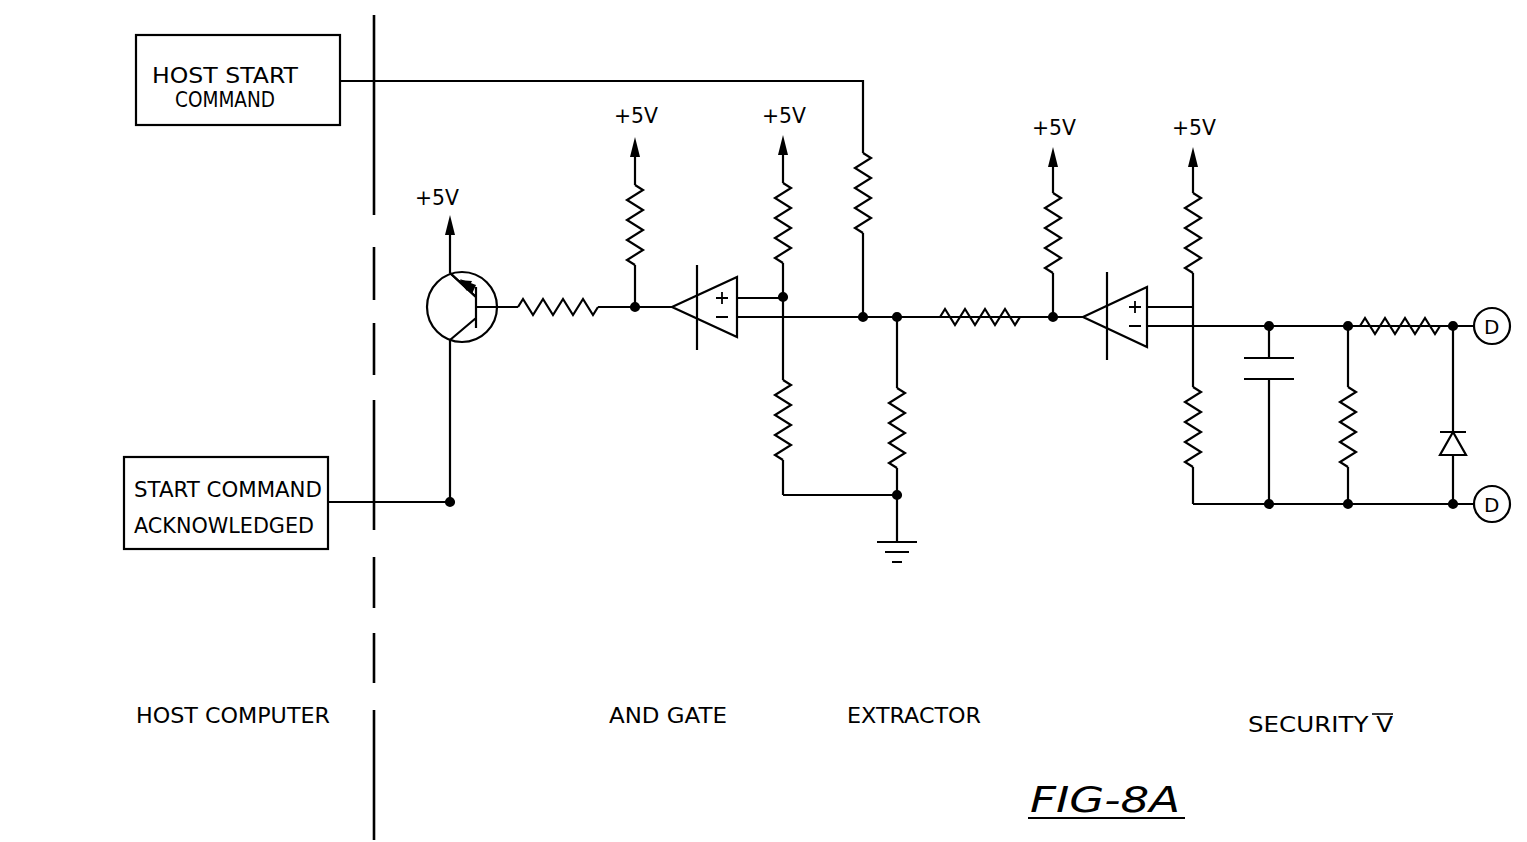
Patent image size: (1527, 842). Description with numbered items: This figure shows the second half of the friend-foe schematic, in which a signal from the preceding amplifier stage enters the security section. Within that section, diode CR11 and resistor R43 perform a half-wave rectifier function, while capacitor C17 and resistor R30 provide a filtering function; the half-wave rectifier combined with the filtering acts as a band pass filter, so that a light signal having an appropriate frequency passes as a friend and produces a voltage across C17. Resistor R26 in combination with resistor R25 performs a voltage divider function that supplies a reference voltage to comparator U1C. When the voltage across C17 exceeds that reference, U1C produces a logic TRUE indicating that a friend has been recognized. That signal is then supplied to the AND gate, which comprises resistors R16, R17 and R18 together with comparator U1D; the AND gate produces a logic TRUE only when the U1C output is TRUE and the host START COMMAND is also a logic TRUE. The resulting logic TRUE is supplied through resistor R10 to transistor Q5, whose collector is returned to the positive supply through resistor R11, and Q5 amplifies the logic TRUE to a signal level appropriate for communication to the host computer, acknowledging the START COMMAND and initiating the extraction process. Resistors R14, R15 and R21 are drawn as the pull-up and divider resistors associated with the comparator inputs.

The transistor Q5 is at (467, 303).
The resistor R10 is at (558, 290).
The resistor R11 is at (663, 246).
The comparator U1D is at (700, 301).
The resistor R14 is at (808, 276).
The resistor R15 is at (808, 437).
The resistor R16 is at (889, 226).
The resistor R17 is at (925, 406).
The resistor R18 is at (980, 299).
The resistor R21 is at (1085, 255).
The comparator U1C is at (1128, 300).
The resistor R25 is at (1223, 290).
The resistor R26 is at (1220, 445).
The capacitor C17 is at (1289, 415).
The resistor R30 is at (1376, 415).
The resistor R43 is at (1400, 310).
The diode CR11 is at (1478, 415).